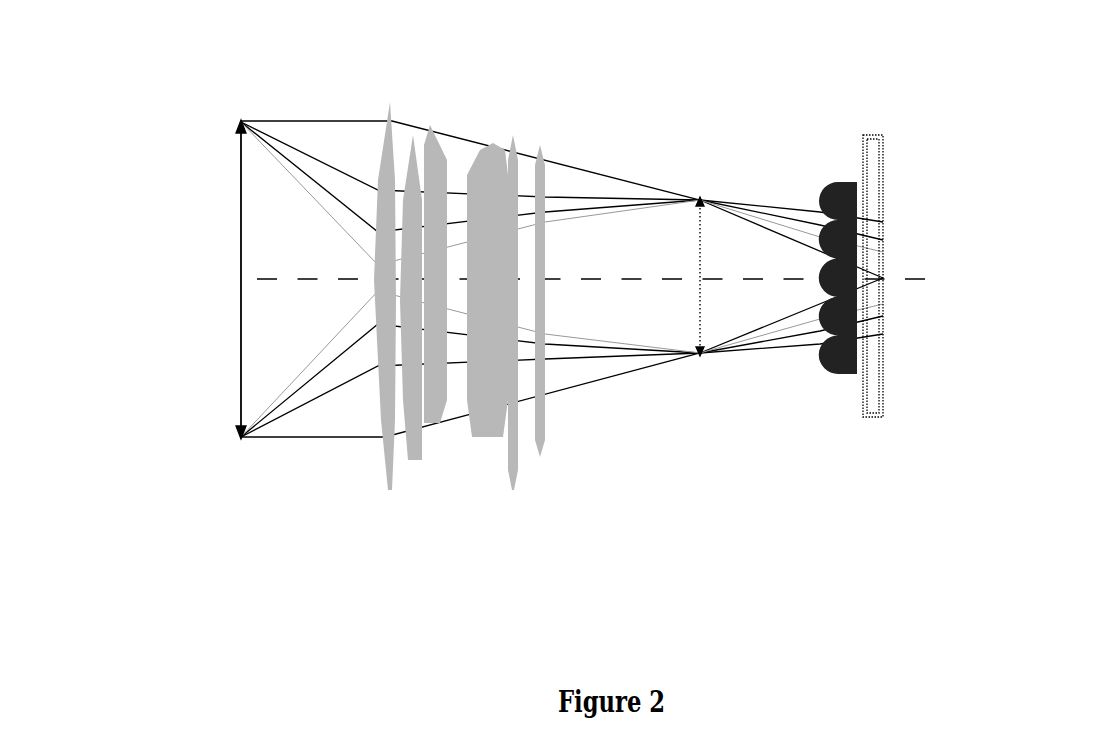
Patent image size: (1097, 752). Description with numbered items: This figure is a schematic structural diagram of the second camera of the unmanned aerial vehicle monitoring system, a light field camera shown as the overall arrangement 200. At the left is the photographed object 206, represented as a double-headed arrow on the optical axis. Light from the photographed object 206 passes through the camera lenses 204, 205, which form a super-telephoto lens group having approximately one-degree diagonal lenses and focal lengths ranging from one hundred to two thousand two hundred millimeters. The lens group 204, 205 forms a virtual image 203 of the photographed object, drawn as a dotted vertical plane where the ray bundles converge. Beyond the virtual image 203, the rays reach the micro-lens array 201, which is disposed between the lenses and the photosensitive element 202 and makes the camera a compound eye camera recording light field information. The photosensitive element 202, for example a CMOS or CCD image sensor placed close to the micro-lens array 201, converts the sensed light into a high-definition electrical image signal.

The imaging system 200 is at (935, 101).
The micro-lens array 201 is at (838, 182).
The photosensitive element 202 is at (885, 324).
The virtual image 203 is at (700, 356).
The camera lens 204 is at (507, 462).
The camera lens 205 is at (396, 488).
The photographed object 206 is at (236, 353).